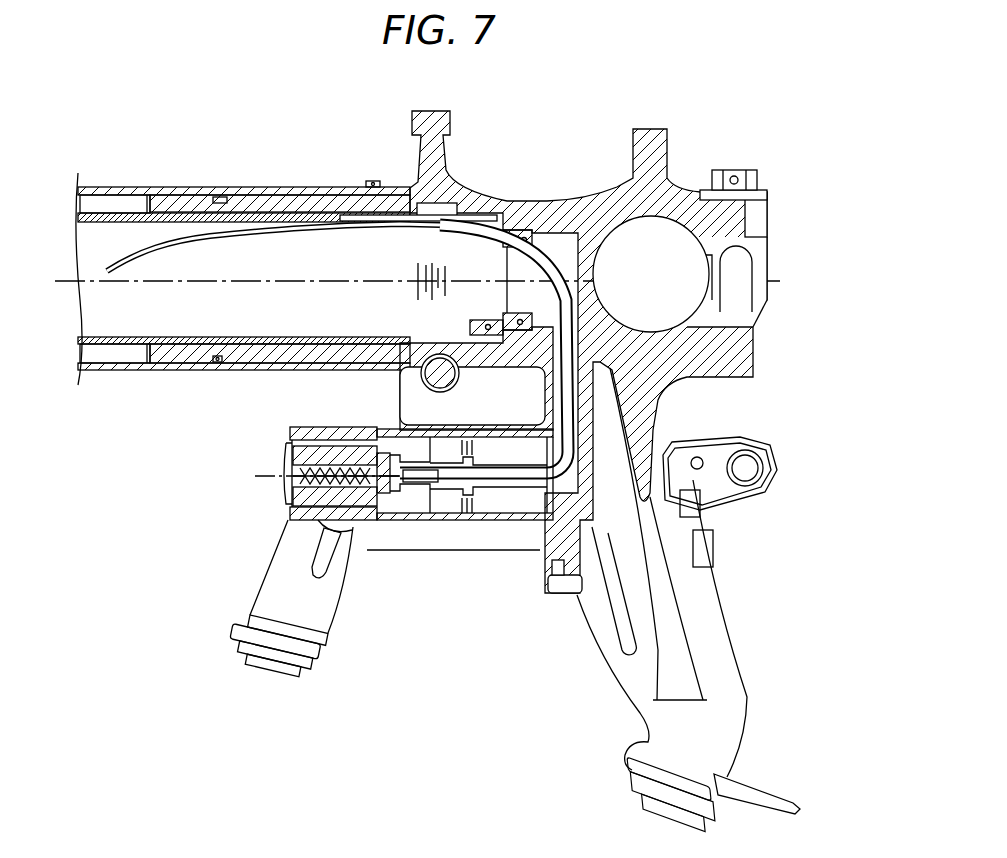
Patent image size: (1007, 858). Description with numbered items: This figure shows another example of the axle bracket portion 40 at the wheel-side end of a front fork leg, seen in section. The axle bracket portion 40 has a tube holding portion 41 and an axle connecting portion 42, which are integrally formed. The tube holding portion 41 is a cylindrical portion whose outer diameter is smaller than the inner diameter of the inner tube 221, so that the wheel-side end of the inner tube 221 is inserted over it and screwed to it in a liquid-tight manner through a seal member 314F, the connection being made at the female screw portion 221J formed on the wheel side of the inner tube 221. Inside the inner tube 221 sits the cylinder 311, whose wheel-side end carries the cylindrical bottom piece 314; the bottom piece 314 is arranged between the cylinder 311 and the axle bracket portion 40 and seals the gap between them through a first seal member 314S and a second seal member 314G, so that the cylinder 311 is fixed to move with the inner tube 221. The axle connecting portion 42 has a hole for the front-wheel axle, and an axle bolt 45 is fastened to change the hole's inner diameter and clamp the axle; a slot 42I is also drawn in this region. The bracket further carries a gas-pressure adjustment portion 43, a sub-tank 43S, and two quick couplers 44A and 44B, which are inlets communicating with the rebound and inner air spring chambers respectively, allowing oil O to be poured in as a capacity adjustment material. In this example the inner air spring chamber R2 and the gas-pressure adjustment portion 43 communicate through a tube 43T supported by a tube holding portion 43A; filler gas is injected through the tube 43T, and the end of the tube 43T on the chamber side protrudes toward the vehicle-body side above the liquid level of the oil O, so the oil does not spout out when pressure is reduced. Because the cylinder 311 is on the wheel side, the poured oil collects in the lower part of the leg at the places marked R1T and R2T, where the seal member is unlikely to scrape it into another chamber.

The axle bracket portion 40 is at (722, 414).
The tube holding portion 41 is at (397, 156).
The axle connecting portion 42 is at (691, 158).
The slot in rear body 42I is at (722, 267).
The gas-pressure adjustment portion 43 is at (289, 485).
The tube holding portion 43A is at (390, 500).
The sub-tank 43S is at (343, 557).
The tube 43T is at (513, 487).
The quick coupler 44A is at (425, 378).
The quick coupler 44B is at (545, 598).
The axle bolt 45 is at (745, 170).
The inner tube 221 is at (140, 195).
The female screw portion 221J is at (278, 194).
The cylinder 311 is at (114, 345).
The bottom piece 314 is at (498, 222).
The seal member 314F is at (216, 366).
The first seal member 314S is at (500, 228).
The second seal member 314G is at (545, 240).
The oil collecting place R1T is at (138, 205).
The inner air spring chamber R2 is at (110, 247).
The oil collecting place R2T is at (400, 268).
The oil O is at (420, 318).